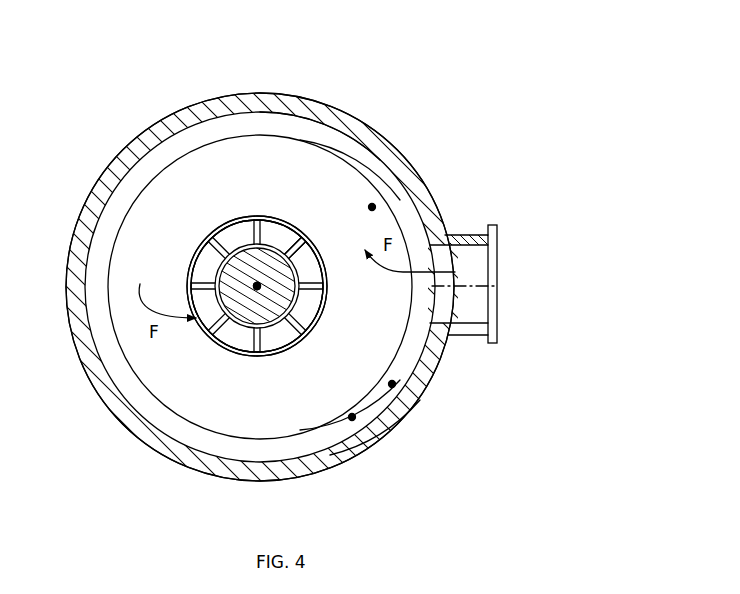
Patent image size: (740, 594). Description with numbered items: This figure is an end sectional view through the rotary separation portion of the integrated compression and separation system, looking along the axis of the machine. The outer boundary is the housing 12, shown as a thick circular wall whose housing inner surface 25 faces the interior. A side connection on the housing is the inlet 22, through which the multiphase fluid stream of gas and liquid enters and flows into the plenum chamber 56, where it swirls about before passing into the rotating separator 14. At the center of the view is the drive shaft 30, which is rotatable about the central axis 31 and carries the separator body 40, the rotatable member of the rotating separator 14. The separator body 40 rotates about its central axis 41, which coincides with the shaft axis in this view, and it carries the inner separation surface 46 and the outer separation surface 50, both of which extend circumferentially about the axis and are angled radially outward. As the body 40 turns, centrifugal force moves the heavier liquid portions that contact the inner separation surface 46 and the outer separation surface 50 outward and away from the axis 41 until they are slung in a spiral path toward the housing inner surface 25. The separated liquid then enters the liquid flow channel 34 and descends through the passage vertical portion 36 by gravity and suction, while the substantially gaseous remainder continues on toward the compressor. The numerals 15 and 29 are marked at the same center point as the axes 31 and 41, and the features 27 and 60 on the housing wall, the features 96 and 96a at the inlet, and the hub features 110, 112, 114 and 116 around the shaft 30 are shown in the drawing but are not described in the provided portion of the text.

The housing 12 is at (108, 120).
The rotating separator 14 is at (188, 366).
The central axis 15 is at (260, 286).
The inlet 22 is at (473, 229).
The housing inner surface 25 is at (303, 122).
The chamber wall 27 is at (360, 166).
The axis 29 is at (326, 283).
The drive shaft 30 is at (283, 306).
The central axis 31 is at (316, 297).
The liquid flow channel 34 is at (392, 384).
The passage vertical portion 36 is at (352, 417).
The separator body 40 is at (211, 226).
The central axis 41 is at (324, 297).
The inner separation surface 46 is at (286, 220).
The outer separation surface 50 is at (277, 356).
The plenum chamber 56 is at (372, 207).
The annular passage 60 is at (231, 131).
The flange 96 is at (497, 235).
The pipe centerline 96a is at (470, 287).
The hub 110 is at (193, 249).
The rib 112 is at (298, 230).
The outer ring 114 is at (245, 217).
The openings 116 is at (308, 252).